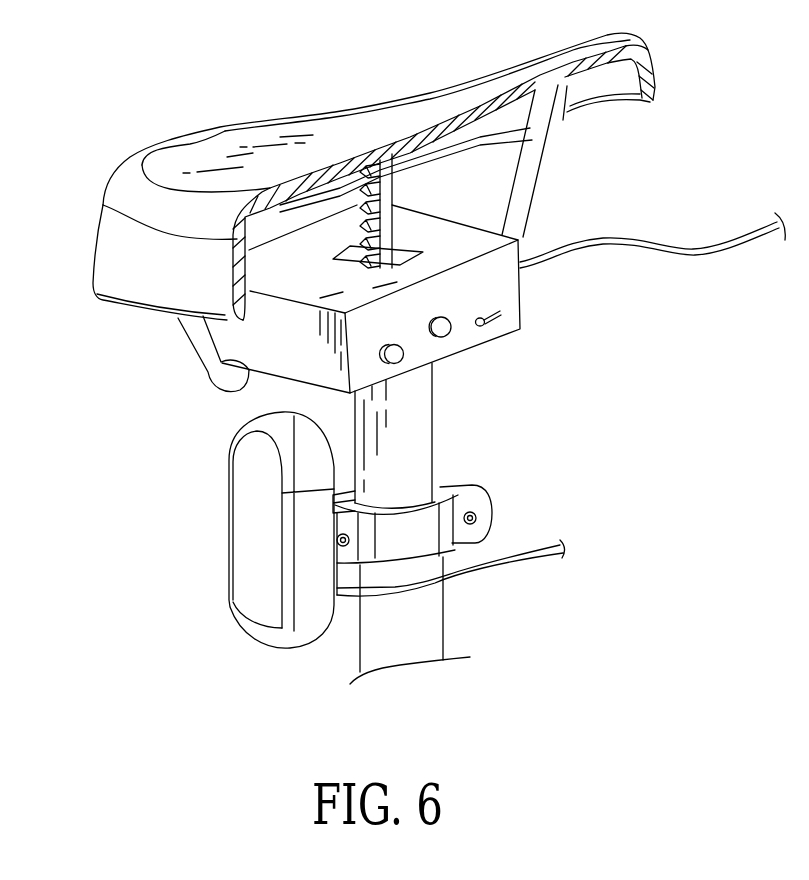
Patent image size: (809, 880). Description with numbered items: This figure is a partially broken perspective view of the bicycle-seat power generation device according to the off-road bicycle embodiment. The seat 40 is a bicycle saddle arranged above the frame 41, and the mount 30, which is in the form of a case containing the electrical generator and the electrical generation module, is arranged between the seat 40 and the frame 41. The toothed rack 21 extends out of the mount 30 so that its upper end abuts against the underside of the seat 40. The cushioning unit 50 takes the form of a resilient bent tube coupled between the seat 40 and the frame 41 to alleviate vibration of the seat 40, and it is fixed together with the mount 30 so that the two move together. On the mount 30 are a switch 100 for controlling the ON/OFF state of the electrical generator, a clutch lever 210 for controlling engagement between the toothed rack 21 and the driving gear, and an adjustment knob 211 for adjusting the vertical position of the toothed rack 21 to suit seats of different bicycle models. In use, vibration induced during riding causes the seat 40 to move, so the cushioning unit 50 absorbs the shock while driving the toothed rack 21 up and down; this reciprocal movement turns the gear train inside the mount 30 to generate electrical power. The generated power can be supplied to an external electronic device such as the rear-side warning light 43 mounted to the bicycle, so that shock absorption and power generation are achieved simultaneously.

The seat 40 is at (446, 108).
The toothed rack 21 is at (388, 207).
The mount 30 is at (507, 285).
The clutch lever 210 is at (493, 322).
The adjustment knob 211 is at (449, 333).
The switch 100 is at (396, 354).
The cushioning unit 50 is at (228, 376).
The rear-side warning light 43 is at (257, 523).
The frame 41 is at (422, 610).